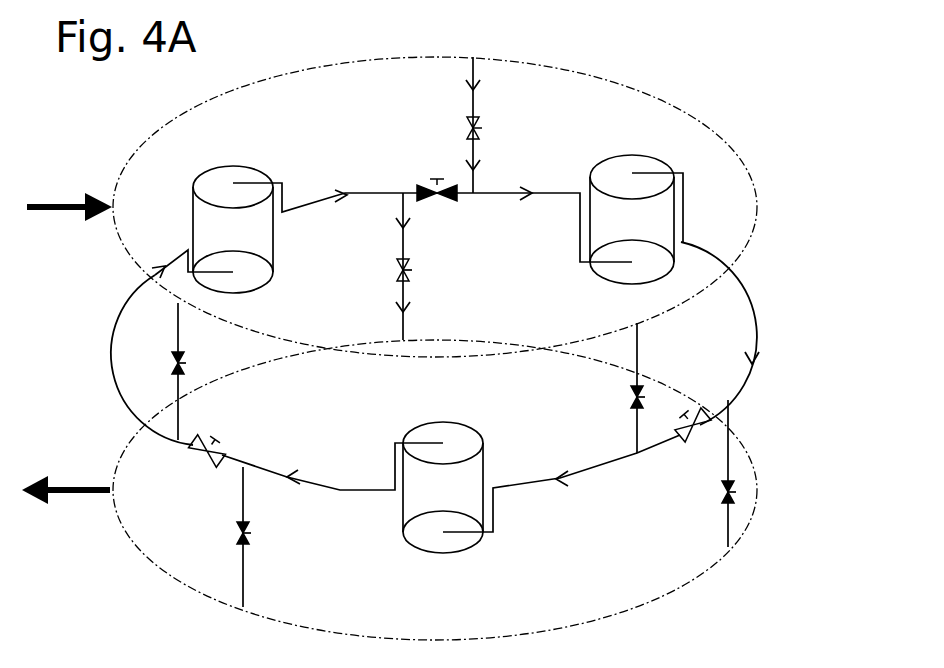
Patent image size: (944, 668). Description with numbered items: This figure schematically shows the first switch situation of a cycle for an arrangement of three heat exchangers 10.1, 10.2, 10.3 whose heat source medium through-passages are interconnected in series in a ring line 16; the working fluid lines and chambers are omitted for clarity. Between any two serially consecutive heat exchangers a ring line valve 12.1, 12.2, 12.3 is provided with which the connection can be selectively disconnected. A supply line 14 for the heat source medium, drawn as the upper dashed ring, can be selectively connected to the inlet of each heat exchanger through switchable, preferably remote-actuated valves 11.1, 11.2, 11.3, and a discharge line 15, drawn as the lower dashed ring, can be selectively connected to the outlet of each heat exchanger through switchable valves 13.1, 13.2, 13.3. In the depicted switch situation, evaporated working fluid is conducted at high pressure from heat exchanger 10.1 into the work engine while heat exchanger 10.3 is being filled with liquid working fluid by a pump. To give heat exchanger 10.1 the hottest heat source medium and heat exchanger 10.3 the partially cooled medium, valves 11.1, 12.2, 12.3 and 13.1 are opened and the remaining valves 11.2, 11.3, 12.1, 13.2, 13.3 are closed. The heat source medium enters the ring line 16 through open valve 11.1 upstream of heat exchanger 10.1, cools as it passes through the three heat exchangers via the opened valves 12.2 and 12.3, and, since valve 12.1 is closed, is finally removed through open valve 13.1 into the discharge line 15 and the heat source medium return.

The heat exchanger 10.1 is at (632, 208).
The heat exchanger 10.2 is at (443, 477).
The heat exchanger 10.3 is at (233, 216).
The switchable valve 11.1 is at (498, 128).
The switchable valve 11.2 is at (615, 388).
The switchable valve 11.3 is at (204, 371).
The ring line valve 12.1 is at (435, 179).
The ring line valve 12.2 is at (692, 438).
The ring line valve 12.3 is at (223, 443).
The switchable valve 13.1 is at (429, 266).
The switchable valve 13.2 is at (705, 473).
The switchable valve 13.3 is at (268, 537).
The supply line 14 is at (628, 83).
The discharge line 15 is at (713, 565).
The ring line 16 is at (746, 293).